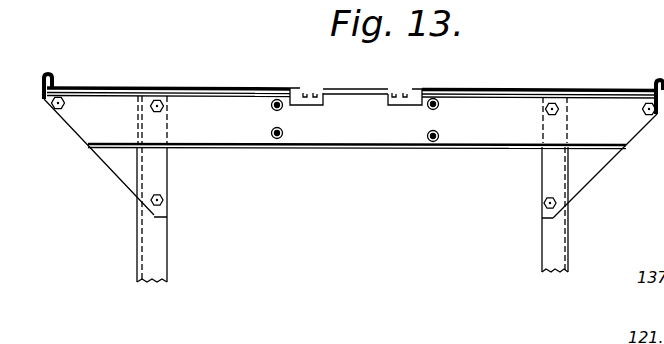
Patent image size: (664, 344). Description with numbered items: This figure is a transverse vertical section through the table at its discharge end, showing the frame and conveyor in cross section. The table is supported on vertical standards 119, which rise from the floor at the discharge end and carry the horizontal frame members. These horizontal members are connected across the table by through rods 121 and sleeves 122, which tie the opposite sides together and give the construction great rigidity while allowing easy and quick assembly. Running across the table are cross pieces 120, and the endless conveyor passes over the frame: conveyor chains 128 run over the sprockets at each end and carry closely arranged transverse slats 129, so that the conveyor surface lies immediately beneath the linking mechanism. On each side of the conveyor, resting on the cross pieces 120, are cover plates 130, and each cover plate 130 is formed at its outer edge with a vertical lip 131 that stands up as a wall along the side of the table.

The vertical standard 119 is at (157, 257).
The cross piece 120 is at (318, 130).
The through rod 121 is at (435, 134).
The sleeve 122 is at (428, 139).
The conveyor chain 128 is at (388, 94).
The slat 129 is at (338, 89).
The cover plate 130 is at (245, 75).
The vertical lip 131 is at (655, 80).